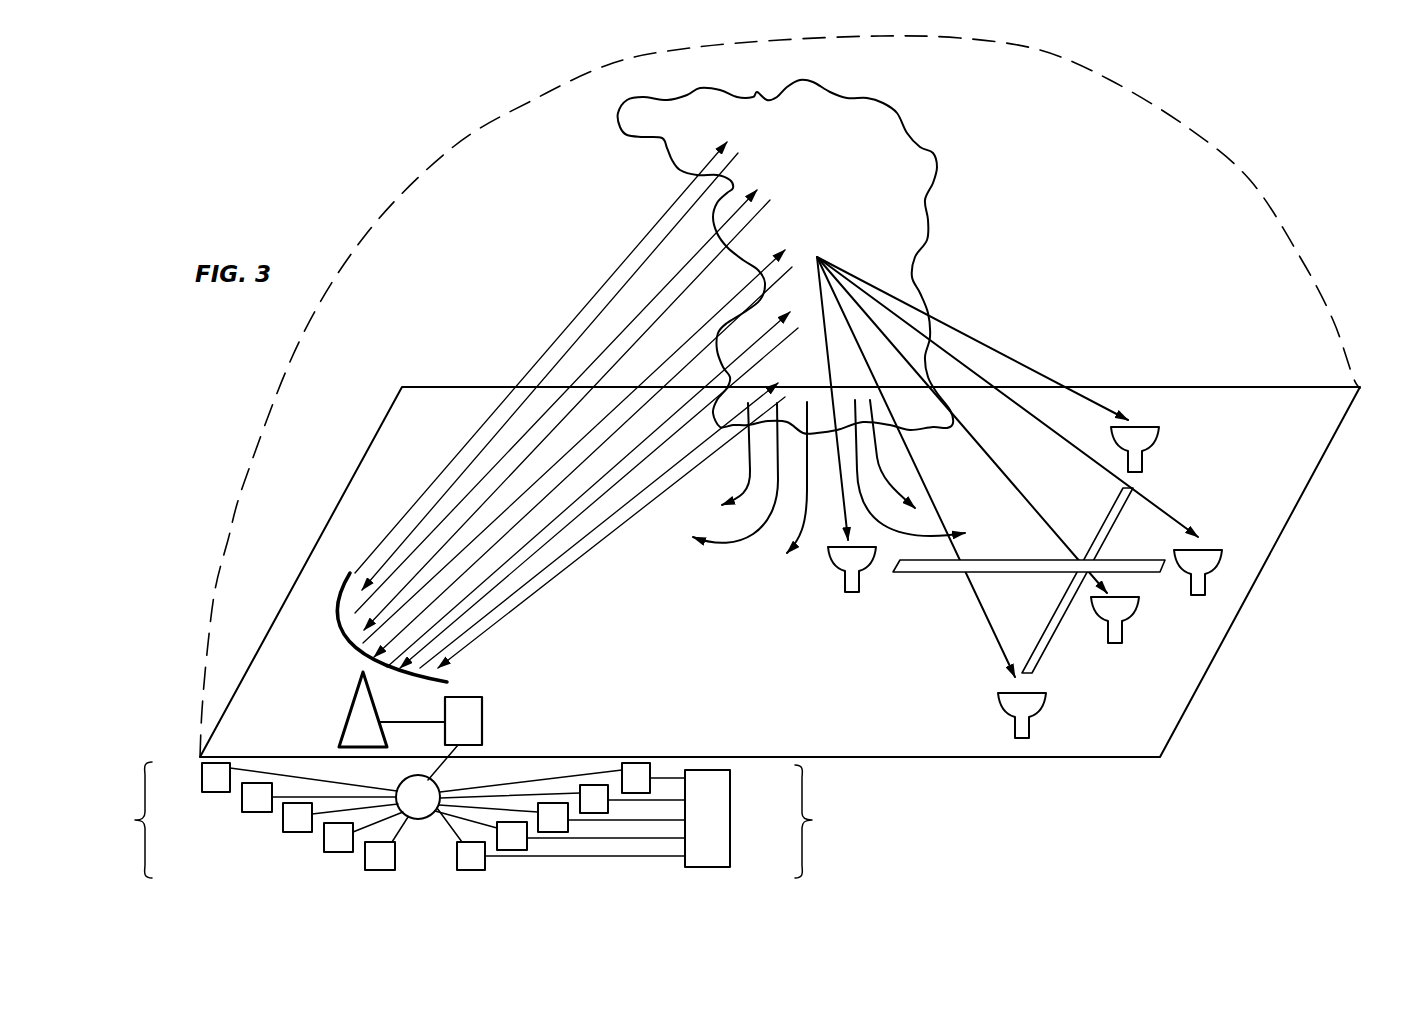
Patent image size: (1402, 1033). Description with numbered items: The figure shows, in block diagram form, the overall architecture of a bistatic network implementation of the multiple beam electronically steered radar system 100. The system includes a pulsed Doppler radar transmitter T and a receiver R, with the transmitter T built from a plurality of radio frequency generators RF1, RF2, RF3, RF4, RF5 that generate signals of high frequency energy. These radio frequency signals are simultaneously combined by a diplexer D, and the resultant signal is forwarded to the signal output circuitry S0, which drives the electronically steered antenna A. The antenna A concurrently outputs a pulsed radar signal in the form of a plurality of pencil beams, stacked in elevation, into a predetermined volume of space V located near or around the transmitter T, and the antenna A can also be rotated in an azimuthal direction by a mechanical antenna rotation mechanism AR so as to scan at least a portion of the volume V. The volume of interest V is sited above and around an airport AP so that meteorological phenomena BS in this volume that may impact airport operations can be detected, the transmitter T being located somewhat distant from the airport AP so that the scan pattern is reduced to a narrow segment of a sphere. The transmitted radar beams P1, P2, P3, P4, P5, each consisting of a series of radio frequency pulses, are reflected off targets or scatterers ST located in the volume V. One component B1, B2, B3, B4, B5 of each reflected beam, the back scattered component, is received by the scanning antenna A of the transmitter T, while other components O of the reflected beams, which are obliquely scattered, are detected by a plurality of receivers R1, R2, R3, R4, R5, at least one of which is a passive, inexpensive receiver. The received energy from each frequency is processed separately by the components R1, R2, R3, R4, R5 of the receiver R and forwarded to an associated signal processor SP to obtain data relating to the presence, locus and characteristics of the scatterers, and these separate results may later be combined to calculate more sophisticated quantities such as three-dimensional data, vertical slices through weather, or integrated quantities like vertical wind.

The predetermined volume of space V is at (1041, 97).
The targets (scatterers) ST is at (833, 218).
The meteorological phenomena BS is at (937, 185).
The transmitted radar beam P1 is at (660, 220).
The transmitted radar beam P2 is at (626, 327).
The transmitted radar beam P3 is at (600, 423).
The transmitted radar beam P4 is at (574, 502).
The transmitted radar beam P5 is at (539, 572).
The back scattered component B1 is at (641, 267).
The back scattered component B2 is at (604, 375).
The back scattered component B3 is at (581, 463).
The back scattered component B4 is at (556, 535).
The back scattered component B5 is at (514, 607).
The electronically steered antenna A is at (345, 632).
The antenna rotation mechanism AR is at (345, 715).
The signal output circuitry S0 is at (482, 707).
The multiple beam electronically steered radar system 100 is at (588, 670).
The airport AP is at (1060, 597).
The receiver R1 is at (862, 590).
The receiver R2 is at (1159, 447).
The receiver R3 is at (1192, 583).
The receiver R4 is at (1115, 645).
The receiver R5 is at (1030, 725).
The obliquely scattered components O is at (1047, 372).
The diplexer D is at (437, 783).
The radio frequency generator RF1 is at (202, 776).
The radio frequency generator RF2 is at (242, 797).
The radio frequency generator RF3 is at (283, 818).
The radio frequency generator RF4 is at (324, 838).
The radio frequency generator RF5 is at (365, 858).
The pulsed Doppler radar transmitter T is at (130, 820).
The signal processor SP is at (730, 810).
The receiver R is at (814, 821).